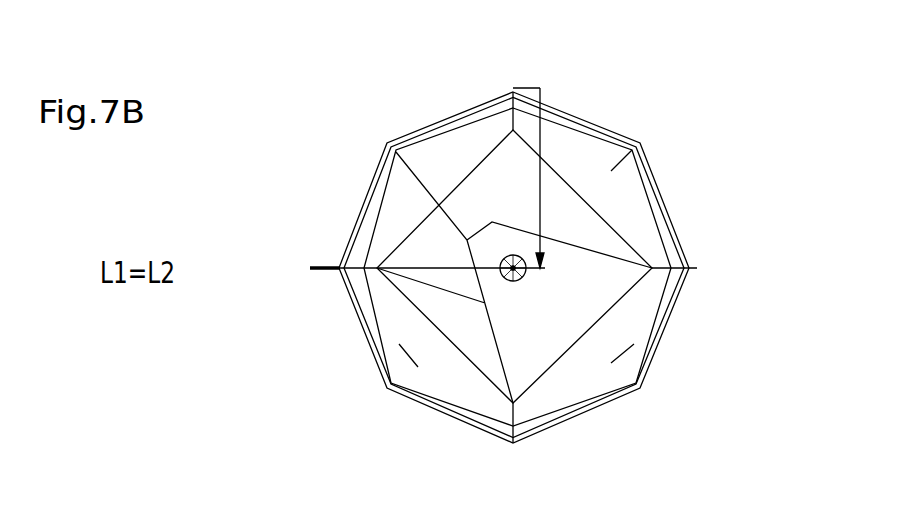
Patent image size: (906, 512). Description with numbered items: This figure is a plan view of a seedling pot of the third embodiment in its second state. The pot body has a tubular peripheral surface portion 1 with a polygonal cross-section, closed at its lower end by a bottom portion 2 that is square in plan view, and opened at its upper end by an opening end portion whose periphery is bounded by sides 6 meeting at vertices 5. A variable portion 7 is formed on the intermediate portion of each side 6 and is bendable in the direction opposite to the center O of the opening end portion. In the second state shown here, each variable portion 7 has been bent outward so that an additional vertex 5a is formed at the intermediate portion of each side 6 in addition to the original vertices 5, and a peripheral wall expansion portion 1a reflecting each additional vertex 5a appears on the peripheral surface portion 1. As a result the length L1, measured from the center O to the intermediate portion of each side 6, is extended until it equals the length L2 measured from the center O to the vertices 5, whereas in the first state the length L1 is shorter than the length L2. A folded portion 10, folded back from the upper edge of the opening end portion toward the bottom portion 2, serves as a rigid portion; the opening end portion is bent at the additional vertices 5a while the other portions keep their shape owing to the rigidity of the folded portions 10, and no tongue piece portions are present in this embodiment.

The peripheral surface portion 1 is at (460, 380).
The peripheral wall expansion portion 1a is at (395, 357).
The bottom portion 2 is at (548, 343).
The vertex 5 is at (517, 88).
The additional vertex 5a is at (383, 145).
The side 6 is at (437, 122).
The variable portion 7 is at (396, 152).
The folded portion 10 is at (581, 121).
The center O is at (508, 260).
The length L1 is at (427, 238).
The length L2 is at (537, 178).